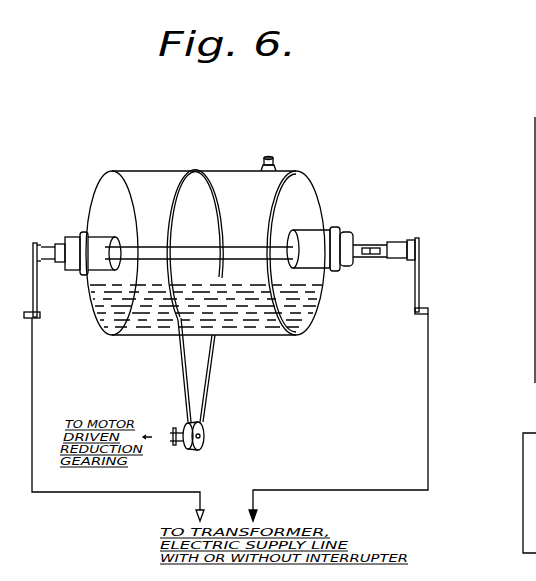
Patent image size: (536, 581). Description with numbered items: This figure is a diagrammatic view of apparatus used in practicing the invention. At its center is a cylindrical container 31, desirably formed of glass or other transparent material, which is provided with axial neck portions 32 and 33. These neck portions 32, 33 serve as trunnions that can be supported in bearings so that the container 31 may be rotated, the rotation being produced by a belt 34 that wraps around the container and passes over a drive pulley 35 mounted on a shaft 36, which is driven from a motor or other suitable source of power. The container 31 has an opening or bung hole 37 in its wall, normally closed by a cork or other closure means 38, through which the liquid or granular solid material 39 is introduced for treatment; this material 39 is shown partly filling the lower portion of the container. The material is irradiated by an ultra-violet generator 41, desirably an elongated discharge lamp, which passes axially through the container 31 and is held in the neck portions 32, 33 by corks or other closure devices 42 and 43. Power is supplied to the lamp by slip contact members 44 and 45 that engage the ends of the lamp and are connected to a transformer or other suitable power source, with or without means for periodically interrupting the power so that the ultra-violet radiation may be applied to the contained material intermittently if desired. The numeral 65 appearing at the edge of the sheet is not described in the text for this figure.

The cylindrical container 31 is at (228, 171).
The axial neck portion 32 is at (85, 232).
The axial neck portion 33 is at (312, 233).
The belt 34 is at (213, 381).
The drive pulley 35 is at (204, 434).
The shaft 36 is at (172, 444).
The opening or bung hole 37 is at (276, 168).
The cork or other closure means 38 is at (271, 157).
The liquid or granular solid material 39 is at (268, 336).
The ultra-violet generator 41 is at (358, 244).
The cork or other closure device 42 is at (69, 237).
The cork or other closure device 43 is at (338, 231).
The slip contact member 44 is at (40, 293).
The slip contact member 45 is at (419, 271).
The adjacent figure numeral 65 is at (109, 580).